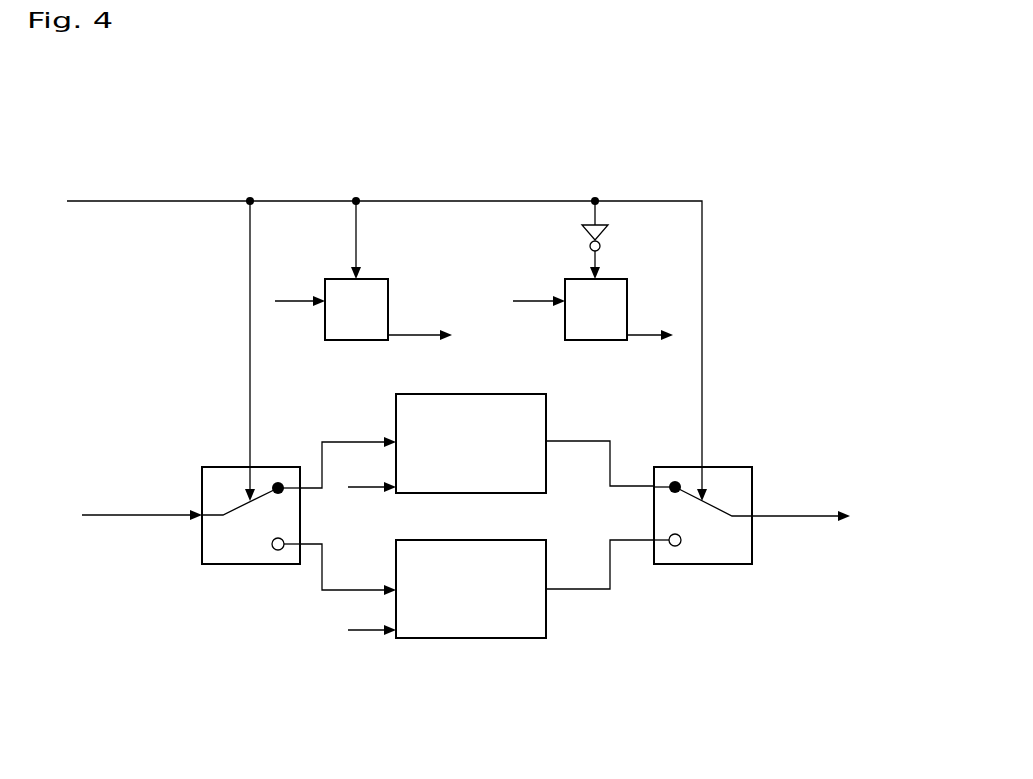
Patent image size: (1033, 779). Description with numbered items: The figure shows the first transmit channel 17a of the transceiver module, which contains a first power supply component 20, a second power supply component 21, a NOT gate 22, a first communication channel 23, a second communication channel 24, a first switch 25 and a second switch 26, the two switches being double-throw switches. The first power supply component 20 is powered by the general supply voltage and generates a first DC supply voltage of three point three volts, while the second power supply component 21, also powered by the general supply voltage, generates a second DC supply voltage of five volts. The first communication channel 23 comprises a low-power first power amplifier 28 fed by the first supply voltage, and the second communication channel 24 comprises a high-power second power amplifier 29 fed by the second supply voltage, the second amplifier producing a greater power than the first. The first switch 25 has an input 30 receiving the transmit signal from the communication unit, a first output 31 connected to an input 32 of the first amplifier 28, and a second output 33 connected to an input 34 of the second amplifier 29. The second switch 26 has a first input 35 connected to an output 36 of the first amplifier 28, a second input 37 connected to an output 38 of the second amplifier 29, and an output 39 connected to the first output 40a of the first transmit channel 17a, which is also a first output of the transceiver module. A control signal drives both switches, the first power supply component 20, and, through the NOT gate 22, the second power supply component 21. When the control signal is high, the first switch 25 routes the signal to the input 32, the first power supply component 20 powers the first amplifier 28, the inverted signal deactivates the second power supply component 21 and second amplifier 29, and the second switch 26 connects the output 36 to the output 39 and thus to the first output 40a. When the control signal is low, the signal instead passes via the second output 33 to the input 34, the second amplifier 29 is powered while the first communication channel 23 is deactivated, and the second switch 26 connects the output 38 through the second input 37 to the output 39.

The first transmit channel 17a is at (569, 167).
The first power supply component 20 is at (381, 279).
The second power supply component 21 is at (618, 279).
The NOT gate 22 is at (583, 228).
The first communication channel 23 is at (562, 397).
The second communication channel 24 is at (606, 610).
The first switch 25 is at (241, 565).
The second switch 26 is at (728, 467).
The first power amplifier 28 is at (505, 394).
The second power amplifier 29 is at (512, 638).
The input 30 is at (211, 518).
The first output 31 is at (303, 489).
The input 32 is at (393, 440).
The second output 33 is at (303, 544).
The input 34 is at (393, 588).
The first input 35 is at (654, 486).
The output 36 is at (548, 441).
The second input 37 is at (654, 541).
The output 38 is at (548, 589).
The output 39 is at (753, 516).
The first output 40a is at (851, 509).